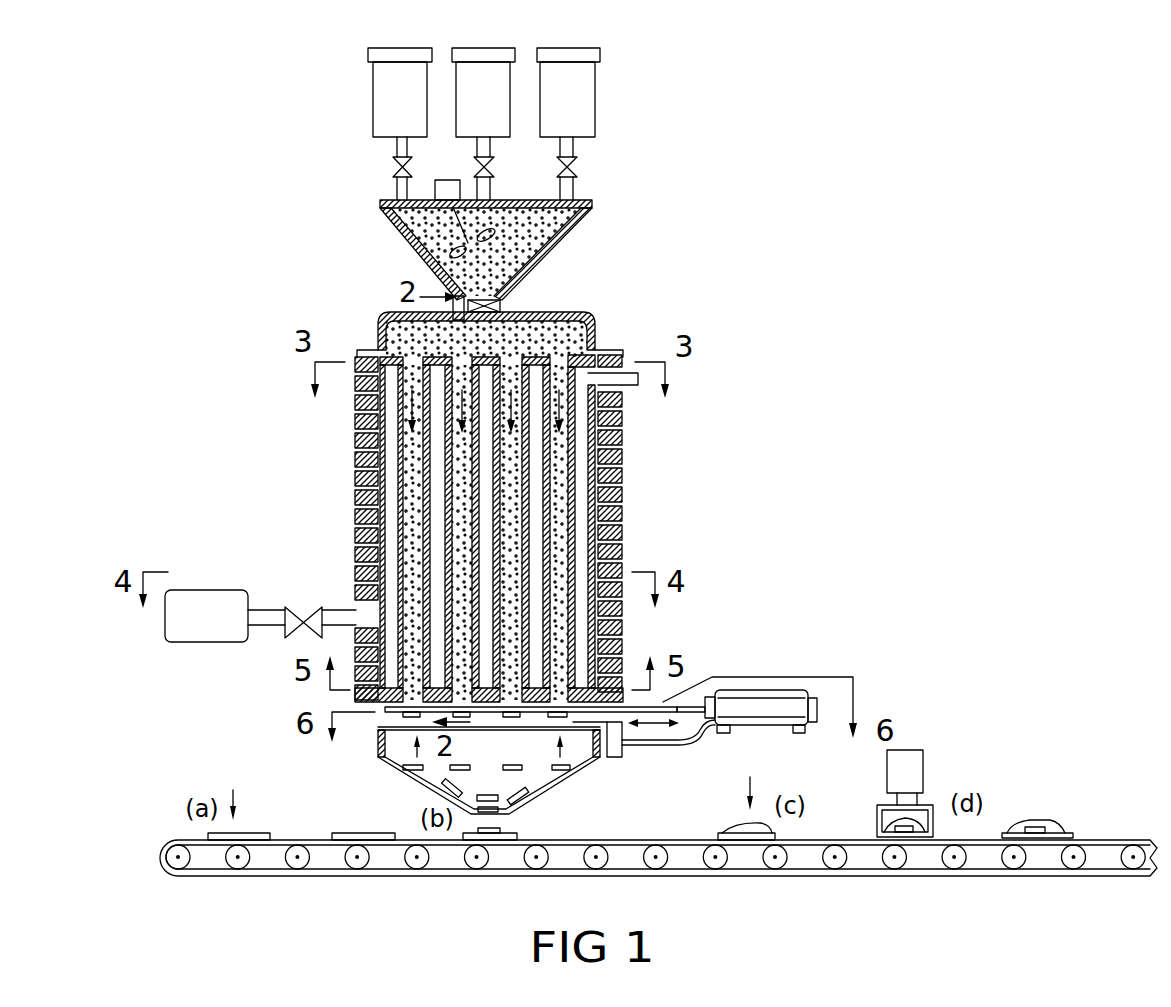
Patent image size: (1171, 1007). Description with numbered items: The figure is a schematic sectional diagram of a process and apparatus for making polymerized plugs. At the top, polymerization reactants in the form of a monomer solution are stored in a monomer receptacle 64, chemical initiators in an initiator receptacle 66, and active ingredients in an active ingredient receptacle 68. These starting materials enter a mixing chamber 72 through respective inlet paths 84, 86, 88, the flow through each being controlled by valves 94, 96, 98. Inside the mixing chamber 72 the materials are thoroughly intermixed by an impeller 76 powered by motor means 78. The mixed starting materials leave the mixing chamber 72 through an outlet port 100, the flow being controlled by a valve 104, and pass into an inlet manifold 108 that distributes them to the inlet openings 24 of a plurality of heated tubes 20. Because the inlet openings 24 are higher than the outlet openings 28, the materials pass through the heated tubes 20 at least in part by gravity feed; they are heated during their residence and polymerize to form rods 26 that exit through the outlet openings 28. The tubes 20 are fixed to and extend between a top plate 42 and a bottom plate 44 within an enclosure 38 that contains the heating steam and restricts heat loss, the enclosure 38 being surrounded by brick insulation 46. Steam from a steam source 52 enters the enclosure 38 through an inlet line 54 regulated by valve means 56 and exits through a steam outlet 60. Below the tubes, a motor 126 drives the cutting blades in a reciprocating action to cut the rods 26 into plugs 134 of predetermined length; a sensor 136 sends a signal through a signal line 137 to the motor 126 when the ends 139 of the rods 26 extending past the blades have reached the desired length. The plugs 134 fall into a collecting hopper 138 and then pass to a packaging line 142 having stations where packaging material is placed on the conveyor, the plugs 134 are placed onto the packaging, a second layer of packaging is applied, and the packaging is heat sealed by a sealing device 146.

The heated tubes 20 is at (393, 432).
The inlet openings 24 is at (408, 358).
The rods 26 is at (510, 714).
The outlet openings 28 is at (470, 690).
The enclosure 38 is at (362, 457).
The top plate 42 is at (593, 350).
The bottom plate 44 is at (560, 768).
The brick insulation 46 is at (357, 534).
The steam source 52 is at (186, 590).
The inlet line 54 is at (337, 610).
The valve means 56 is at (288, 636).
The steam outlet 60 is at (640, 380).
The monomer receptacle 64 is at (385, 67).
The initiator receptacle 66 is at (470, 67).
The active ingredient receptacle 68 is at (560, 67).
The mixing chamber 72 is at (588, 232).
The impeller 76 is at (455, 245).
The motor means 78 is at (380, 203).
The inlet path 84 is at (395, 185).
The inlet path 86 is at (490, 188).
The inlet path 88 is at (576, 190).
The valve 94 is at (395, 163).
The valve 96 is at (466, 152).
The valve 98 is at (575, 162).
The outlet port 100 is at (505, 305).
The valve 104 is at (545, 255).
The inlet manifold 108 is at (390, 300).
The motor 126 is at (762, 690).
The plugs 134 is at (450, 775).
The sensor 136 is at (615, 757).
The signal line 137 is at (695, 737).
The collecting hopper 138 is at (432, 785).
The ends 139 is at (378, 737).
The packaging line 142 is at (302, 890).
The sealing device 146 is at (923, 770).